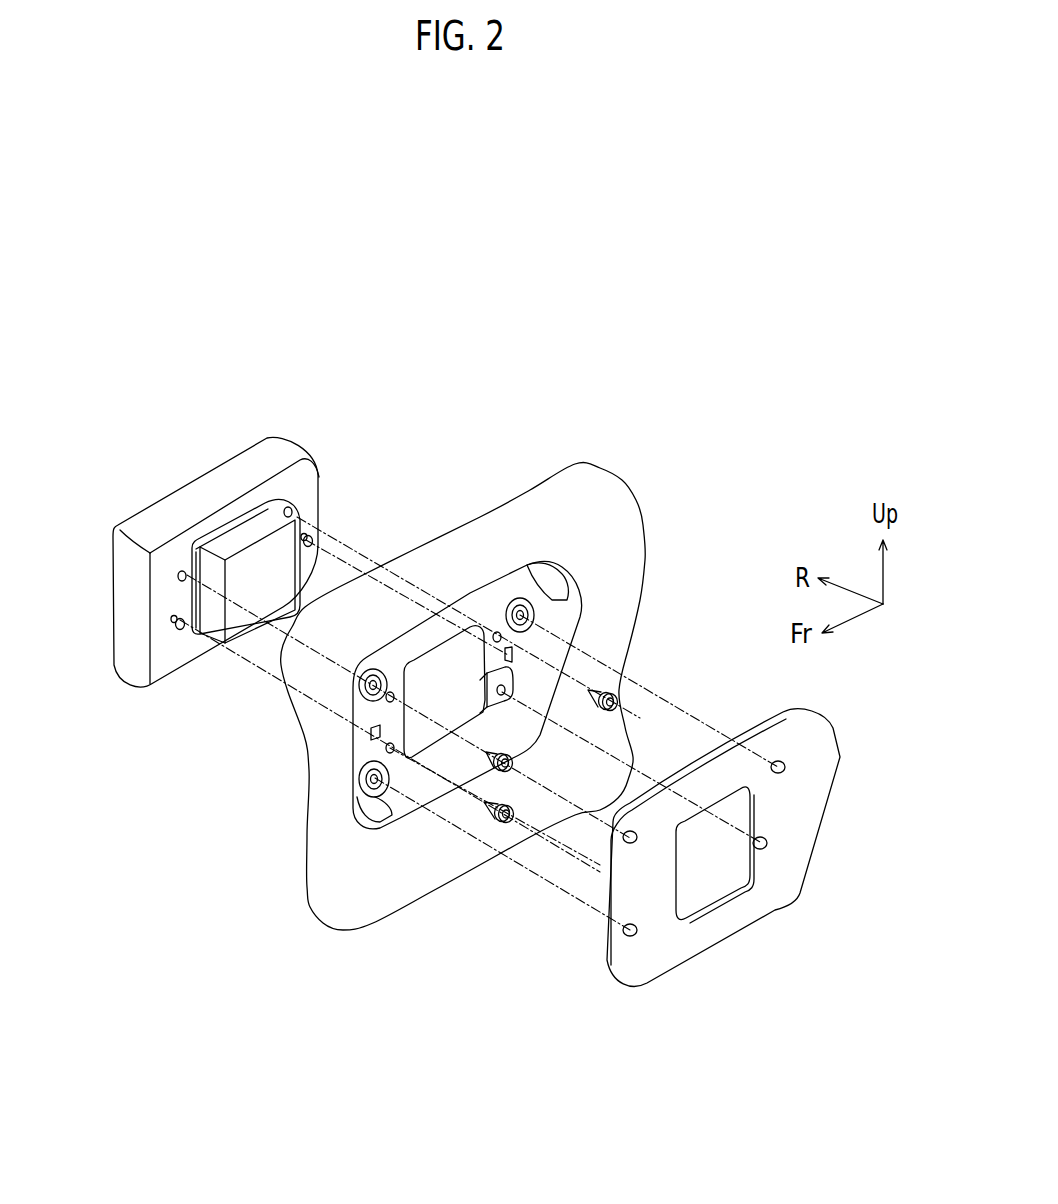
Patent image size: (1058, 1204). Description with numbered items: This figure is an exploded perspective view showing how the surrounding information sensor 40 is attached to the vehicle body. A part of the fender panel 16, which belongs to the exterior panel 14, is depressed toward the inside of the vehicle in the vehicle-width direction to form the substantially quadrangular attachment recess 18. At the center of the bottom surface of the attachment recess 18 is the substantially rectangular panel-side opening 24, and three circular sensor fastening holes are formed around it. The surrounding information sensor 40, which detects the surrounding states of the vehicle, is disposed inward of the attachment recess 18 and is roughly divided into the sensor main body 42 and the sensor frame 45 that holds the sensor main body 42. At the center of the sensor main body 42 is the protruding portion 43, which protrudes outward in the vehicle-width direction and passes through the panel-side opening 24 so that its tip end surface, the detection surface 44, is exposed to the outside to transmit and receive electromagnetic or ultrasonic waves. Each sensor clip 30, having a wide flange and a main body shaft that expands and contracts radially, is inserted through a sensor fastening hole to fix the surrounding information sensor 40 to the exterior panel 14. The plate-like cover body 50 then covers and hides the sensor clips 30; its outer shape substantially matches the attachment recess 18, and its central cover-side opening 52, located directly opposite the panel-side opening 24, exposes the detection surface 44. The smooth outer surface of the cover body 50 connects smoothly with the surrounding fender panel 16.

The exterior panel 14 is at (590, 497).
The fender panel 16 is at (488, 660).
The attachment recess 18 is at (391, 644).
The panel-side opening 24 is at (428, 655).
The sensor clip 30 is at (604, 690).
The surrounding information sensor 40 is at (221, 512).
The sensor main body 42 is at (293, 511).
The protruding portion 43 is at (263, 527).
The detection surface 44 is at (284, 567).
The sensor frame 45 is at (132, 610).
The cover body 50 is at (726, 883).
The cover-side opening 52 is at (718, 888).